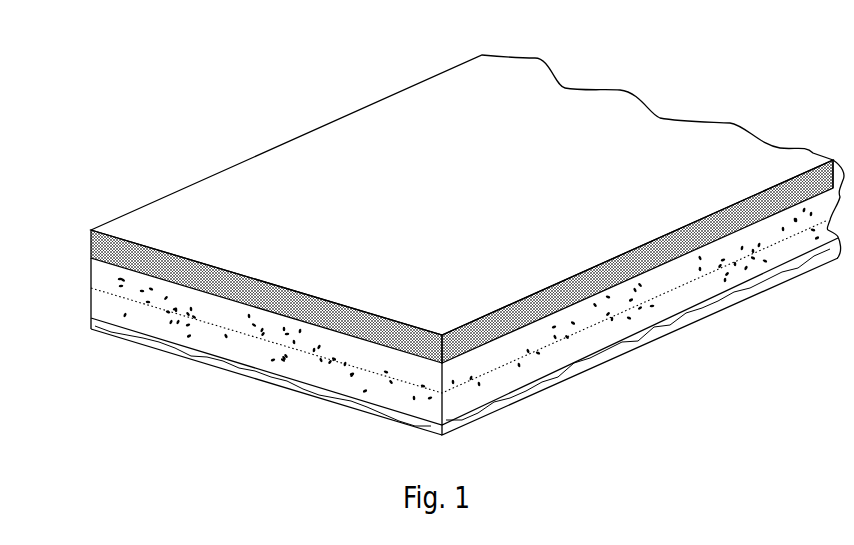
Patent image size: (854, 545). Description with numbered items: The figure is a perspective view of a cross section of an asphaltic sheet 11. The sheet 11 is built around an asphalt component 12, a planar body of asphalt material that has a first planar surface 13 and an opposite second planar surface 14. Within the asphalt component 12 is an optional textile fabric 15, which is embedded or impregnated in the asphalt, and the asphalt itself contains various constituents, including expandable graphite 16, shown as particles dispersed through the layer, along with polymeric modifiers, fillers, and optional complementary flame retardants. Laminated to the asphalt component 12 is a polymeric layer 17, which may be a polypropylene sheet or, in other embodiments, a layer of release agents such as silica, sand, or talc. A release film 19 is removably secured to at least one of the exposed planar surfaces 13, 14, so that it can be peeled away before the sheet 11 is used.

The asphaltic sheet 11 is at (425, 260).
The asphalt component 12 is at (422, 343).
The first planar surface 13 is at (407, 357).
The second planar surface 14 is at (426, 345).
The textile fabric 15 is at (600, 363).
The expandable graphite 16 is at (180, 330).
The polymeric layer 17 is at (90, 247).
The release film 19 is at (677, 330).